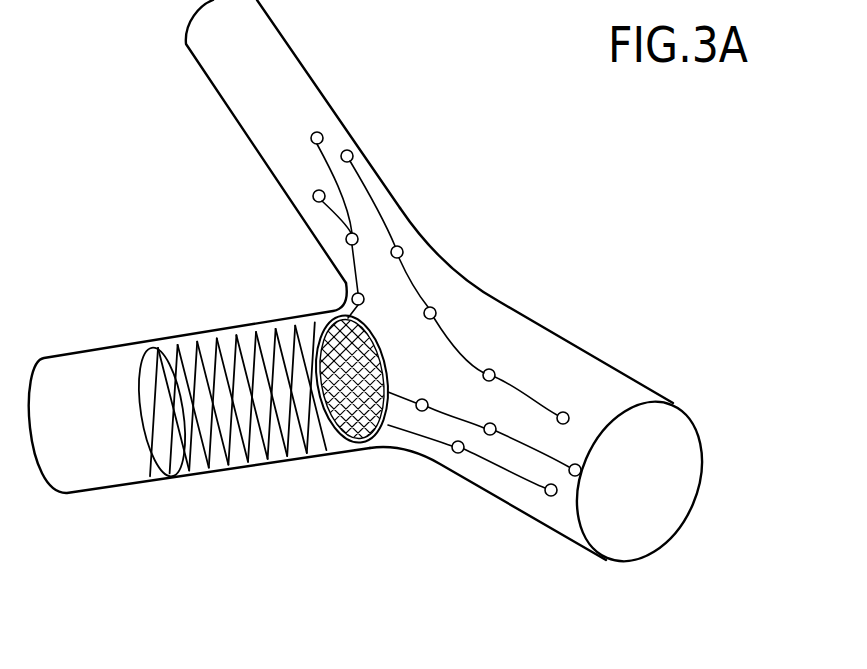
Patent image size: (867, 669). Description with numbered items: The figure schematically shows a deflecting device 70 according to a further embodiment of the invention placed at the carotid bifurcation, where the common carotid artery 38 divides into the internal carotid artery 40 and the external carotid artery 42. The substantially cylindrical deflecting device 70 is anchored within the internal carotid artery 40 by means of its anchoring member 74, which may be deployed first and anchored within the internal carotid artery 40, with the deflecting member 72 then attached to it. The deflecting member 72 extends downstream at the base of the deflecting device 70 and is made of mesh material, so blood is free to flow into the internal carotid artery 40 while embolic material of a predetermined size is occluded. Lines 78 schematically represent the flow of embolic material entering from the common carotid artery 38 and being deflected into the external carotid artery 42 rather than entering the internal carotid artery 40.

The common carotid artery 38 is at (615, 365).
The internal carotid artery 40 is at (90, 462).
The external carotid artery 42 is at (232, 72).
The deflecting device 70 is at (230, 350).
The deflecting member 72 is at (380, 443).
The anchoring member 74 is at (247, 433).
The lines representing flow of embolic material 78 is at (523, 397).